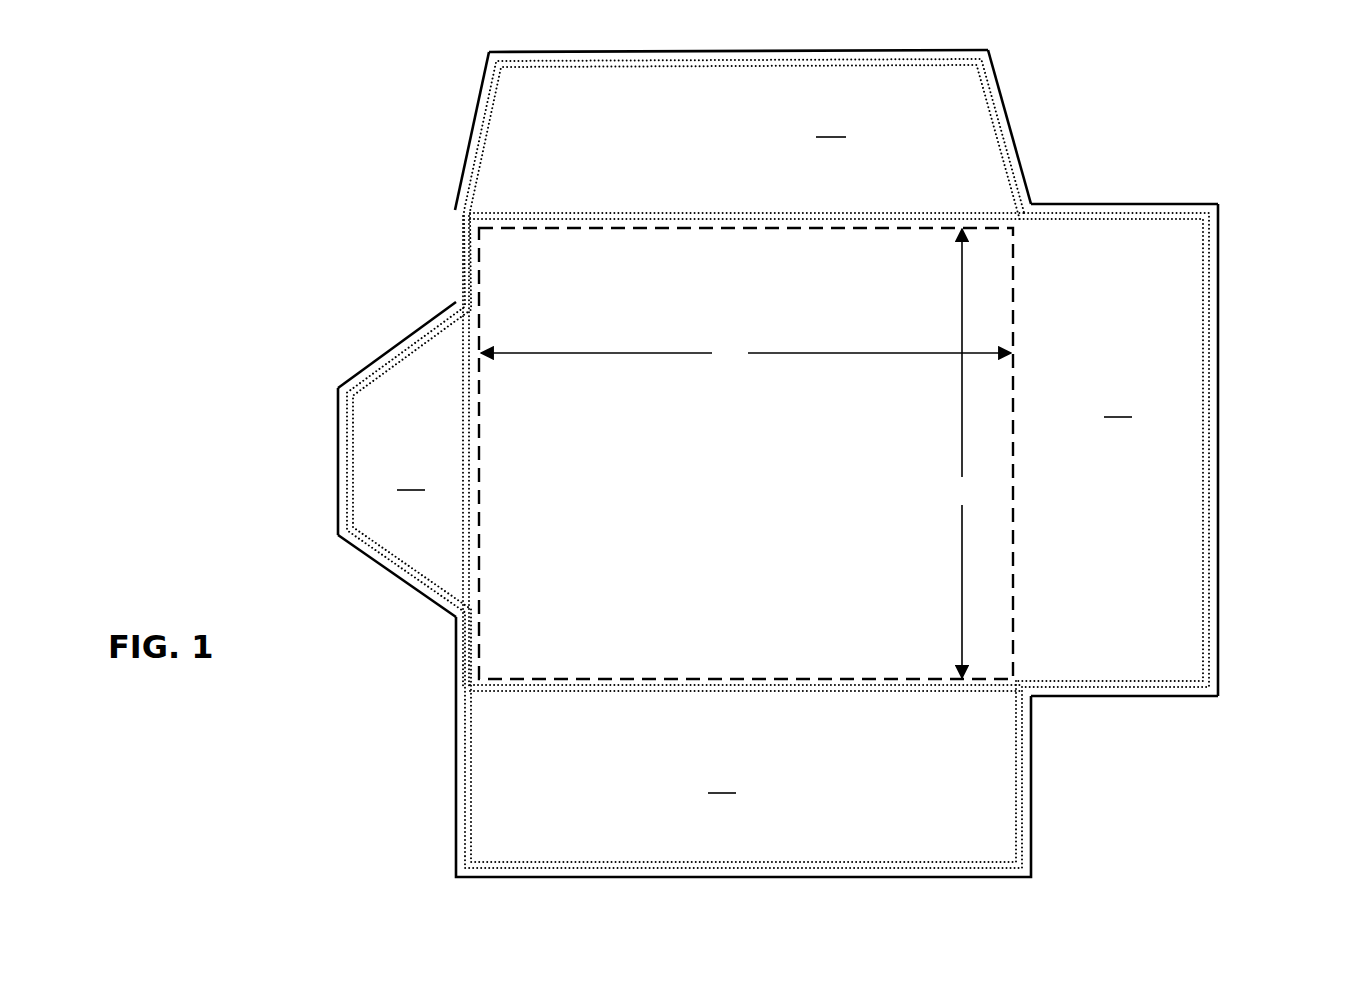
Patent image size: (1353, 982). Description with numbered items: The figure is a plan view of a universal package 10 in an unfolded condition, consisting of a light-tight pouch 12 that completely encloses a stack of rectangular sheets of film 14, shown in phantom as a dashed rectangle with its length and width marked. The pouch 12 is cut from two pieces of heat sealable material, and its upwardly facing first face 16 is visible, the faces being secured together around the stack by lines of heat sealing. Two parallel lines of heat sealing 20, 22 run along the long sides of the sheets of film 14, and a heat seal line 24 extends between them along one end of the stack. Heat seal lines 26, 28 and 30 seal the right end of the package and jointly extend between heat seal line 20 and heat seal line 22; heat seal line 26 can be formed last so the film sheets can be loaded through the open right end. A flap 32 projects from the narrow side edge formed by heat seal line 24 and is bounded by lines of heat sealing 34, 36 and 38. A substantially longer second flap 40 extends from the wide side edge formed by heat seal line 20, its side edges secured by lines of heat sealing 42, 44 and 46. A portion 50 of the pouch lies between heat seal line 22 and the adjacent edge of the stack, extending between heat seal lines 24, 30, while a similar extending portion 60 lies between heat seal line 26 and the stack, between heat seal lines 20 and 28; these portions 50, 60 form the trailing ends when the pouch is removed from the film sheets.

The universal package 10 is at (1118, 789).
The light-tight pouch 12 is at (1224, 636).
The sheets of film 14 is at (1016, 612).
The first face 16 is at (1115, 450).
The line of heat sealing 20 is at (748, 222).
The line of heat sealing 22 is at (861, 693).
The heat seal line 24 is at (470, 440).
The heat seal line 26 is at (1218, 403).
The heat seal line 28 is at (1161, 697).
The heat seal line 30 is at (1113, 215).
The flap 32 is at (399, 460).
The line of heat sealing 34 is at (401, 346).
The line of heat sealing 36 is at (350, 444).
The line of heat sealing 38 is at (406, 584).
The second flap 40 is at (740, 134).
The line of heat sealing 42 is at (474, 134).
The line of heat sealing 44 is at (585, 64).
The line of heat sealing 46 is at (1008, 130).
The extending portion 50 is at (744, 783).
The extending portion 60 is at (1185, 487).